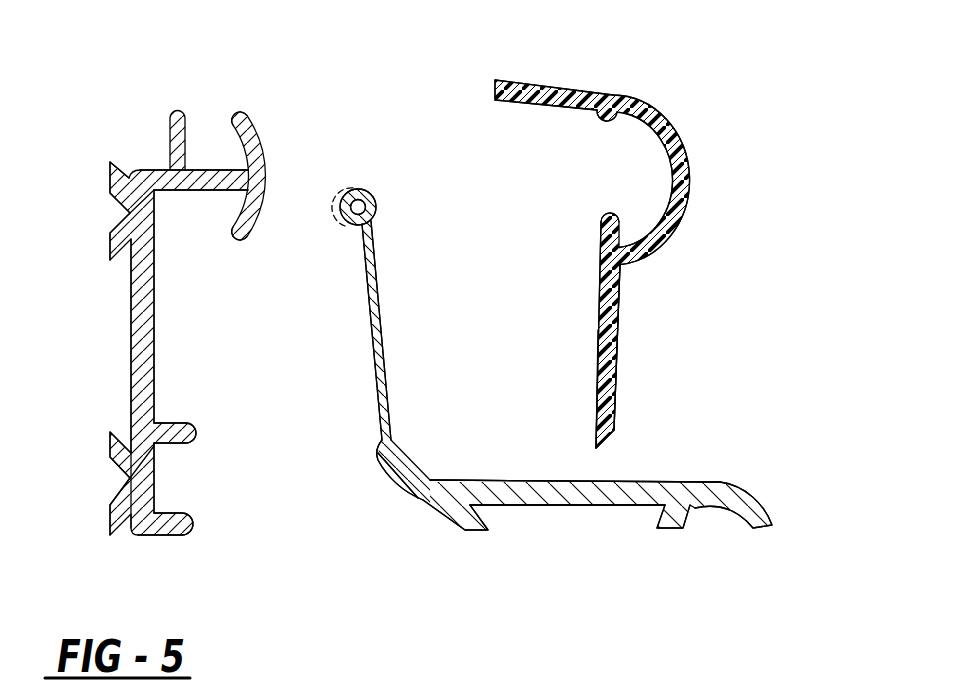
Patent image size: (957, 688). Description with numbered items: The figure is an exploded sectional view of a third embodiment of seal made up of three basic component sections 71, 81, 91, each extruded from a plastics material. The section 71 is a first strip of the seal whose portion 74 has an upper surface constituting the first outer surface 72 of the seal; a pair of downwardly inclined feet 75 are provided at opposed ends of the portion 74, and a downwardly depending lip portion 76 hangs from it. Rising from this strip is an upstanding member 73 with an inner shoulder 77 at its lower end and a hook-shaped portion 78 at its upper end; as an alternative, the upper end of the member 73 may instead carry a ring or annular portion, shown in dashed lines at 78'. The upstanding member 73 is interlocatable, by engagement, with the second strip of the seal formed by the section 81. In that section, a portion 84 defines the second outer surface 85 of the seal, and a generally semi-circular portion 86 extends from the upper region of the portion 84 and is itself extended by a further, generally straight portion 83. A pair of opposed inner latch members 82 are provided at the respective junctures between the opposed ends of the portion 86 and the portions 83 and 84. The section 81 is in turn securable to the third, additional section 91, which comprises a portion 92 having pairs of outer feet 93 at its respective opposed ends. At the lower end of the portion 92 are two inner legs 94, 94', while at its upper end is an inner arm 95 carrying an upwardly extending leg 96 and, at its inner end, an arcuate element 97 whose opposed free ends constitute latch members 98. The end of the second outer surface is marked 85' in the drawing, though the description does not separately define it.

The component section 71 is at (379, 186).
The first outer surface 72 is at (665, 482).
The upstanding member 73 is at (385, 335).
The portion 74 is at (587, 493).
The downwardly inclined feet 75 is at (463, 513).
The downwardly depending lip portion 76 is at (765, 512).
The inner shoulder 77 is at (380, 440).
The hook-shaped portion 78 is at (403, 219).
The ring or annular portion 78' is at (334, 252).
The component section 81 is at (692, 111).
The inner latch members 82 is at (605, 218).
The generally straight portion 83 is at (570, 97).
The portion 84 is at (607, 317).
The second outer surface 85 is at (656, 356).
The adhesive strip end 85' is at (564, 434).
The generally semi-circular portion 86 is at (690, 180).
The component section 91 is at (130, 117).
The portion 92 is at (140, 326).
The outer feet 93 is at (110, 229).
The inner leg 94 is at (210, 399).
The inner leg 94' is at (165, 558).
The inner arm 95 is at (188, 191).
The upwardly extending leg 96 is at (183, 112).
The arcuate element 97 is at (252, 180).
The latch members 98 is at (246, 118).